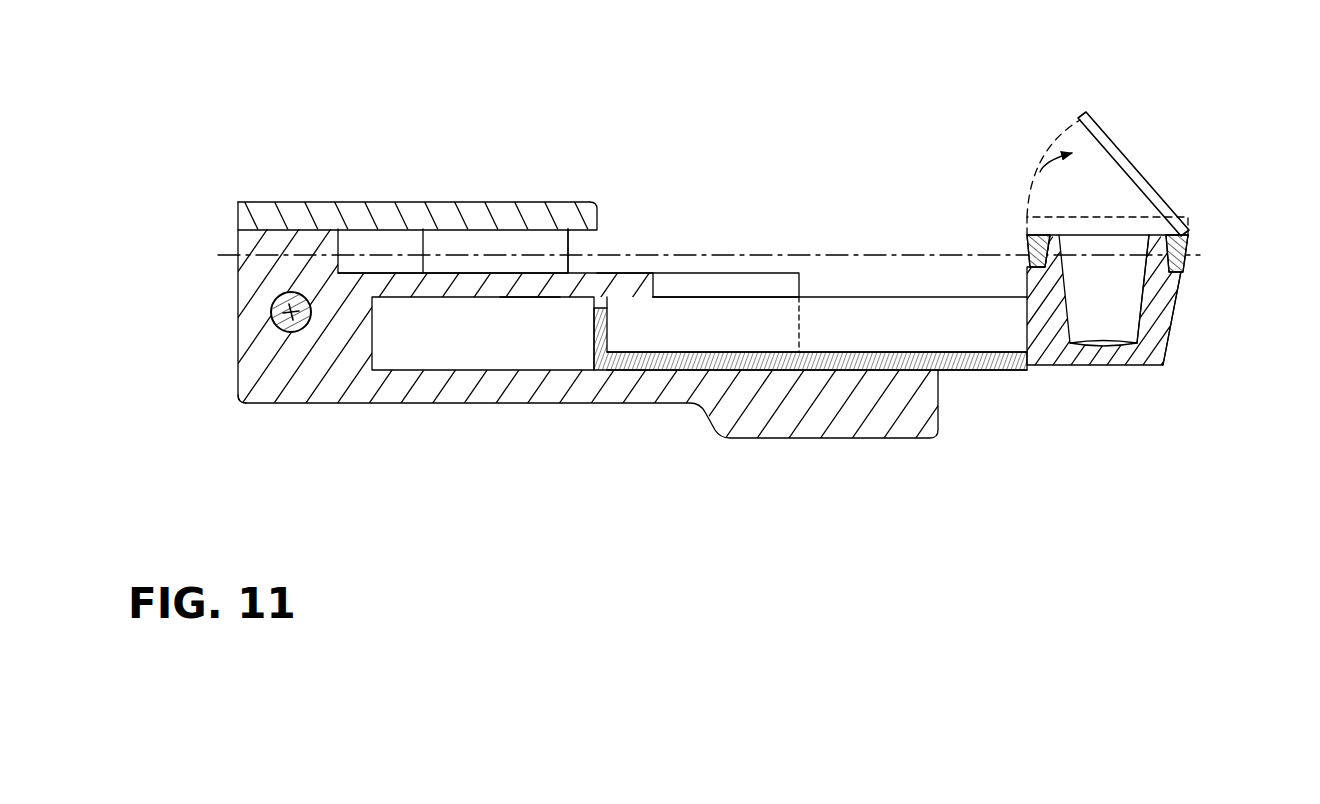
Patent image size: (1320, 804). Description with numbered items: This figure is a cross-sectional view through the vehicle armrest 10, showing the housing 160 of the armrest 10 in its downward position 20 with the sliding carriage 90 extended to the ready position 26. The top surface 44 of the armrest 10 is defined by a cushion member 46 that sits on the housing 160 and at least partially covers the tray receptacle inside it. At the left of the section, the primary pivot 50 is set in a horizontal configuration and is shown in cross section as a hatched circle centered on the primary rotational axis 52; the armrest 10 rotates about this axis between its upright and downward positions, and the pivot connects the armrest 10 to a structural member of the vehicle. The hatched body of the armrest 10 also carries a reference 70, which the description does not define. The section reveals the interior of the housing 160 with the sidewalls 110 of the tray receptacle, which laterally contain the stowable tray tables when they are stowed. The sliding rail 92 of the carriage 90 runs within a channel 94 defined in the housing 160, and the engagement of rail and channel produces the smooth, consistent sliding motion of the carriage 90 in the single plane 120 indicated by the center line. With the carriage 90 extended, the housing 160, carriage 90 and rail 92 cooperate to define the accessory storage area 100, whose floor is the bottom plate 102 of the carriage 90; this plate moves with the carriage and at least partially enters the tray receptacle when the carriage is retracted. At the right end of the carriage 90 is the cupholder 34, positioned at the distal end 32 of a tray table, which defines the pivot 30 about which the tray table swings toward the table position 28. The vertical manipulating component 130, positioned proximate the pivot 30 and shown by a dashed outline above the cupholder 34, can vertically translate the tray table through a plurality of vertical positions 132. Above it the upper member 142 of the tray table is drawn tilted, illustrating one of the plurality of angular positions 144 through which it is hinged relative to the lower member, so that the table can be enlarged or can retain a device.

The armrest 10 is at (415, 185).
The downward position 20 is at (468, 198).
The ready position 26 is at (799, 215).
The table position 28 is at (680, 198).
The pivot 30 is at (1189, 236).
The distal end 32 is at (1168, 283).
The cupholder 34 is at (1107, 312).
The top surface 44 is at (362, 198).
The cushion member 46 is at (252, 214).
The primary pivot 50 is at (283, 297).
The primary rotational axis 52 is at (291, 312).
The housing body 70 is at (385, 405).
The sliding carriage 90 is at (1163, 320).
The sliding rail 92 is at (640, 320).
The channel 94 is at (528, 300).
The accessory storage area 100 is at (872, 316).
The bottom plate 102 is at (765, 355).
The sidewall 110 is at (500, 325).
The single plane 120 is at (222, 255).
The vertical manipulating component 130 is at (1005, 222).
The vertical positions 132 is at (1174, 216).
The upper member 142 is at (1090, 128).
The angular positions 144 is at (1067, 115).
The housing 160 is at (278, 368).